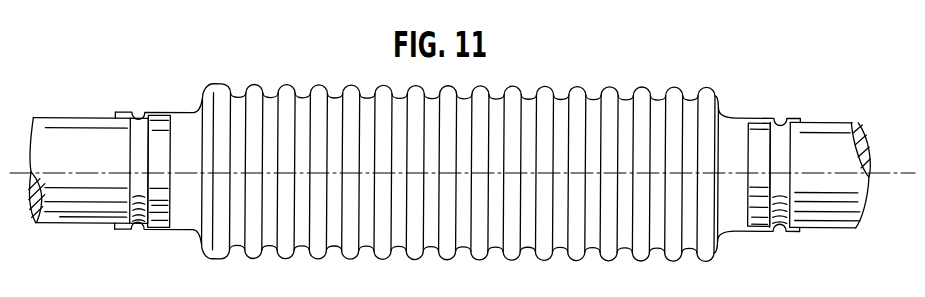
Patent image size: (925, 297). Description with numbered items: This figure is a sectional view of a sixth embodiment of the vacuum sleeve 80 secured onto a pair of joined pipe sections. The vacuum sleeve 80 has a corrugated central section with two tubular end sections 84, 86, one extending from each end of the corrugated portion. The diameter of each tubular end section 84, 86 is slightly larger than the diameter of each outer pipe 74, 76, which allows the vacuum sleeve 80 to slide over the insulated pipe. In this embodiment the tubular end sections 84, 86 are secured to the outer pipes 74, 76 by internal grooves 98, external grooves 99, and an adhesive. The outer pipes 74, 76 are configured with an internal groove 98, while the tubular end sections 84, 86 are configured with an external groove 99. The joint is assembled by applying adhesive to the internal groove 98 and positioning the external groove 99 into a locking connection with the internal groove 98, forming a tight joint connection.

The outer pipe 74 is at (86, 225).
The outer pipe 76 is at (843, 231).
The vacuum sleeve 80 is at (299, 72).
The tubular end section 84 is at (175, 111).
The tubular end section 86 is at (737, 117).
The internal groove 98 is at (137, 112).
The external groove 99 is at (134, 229).